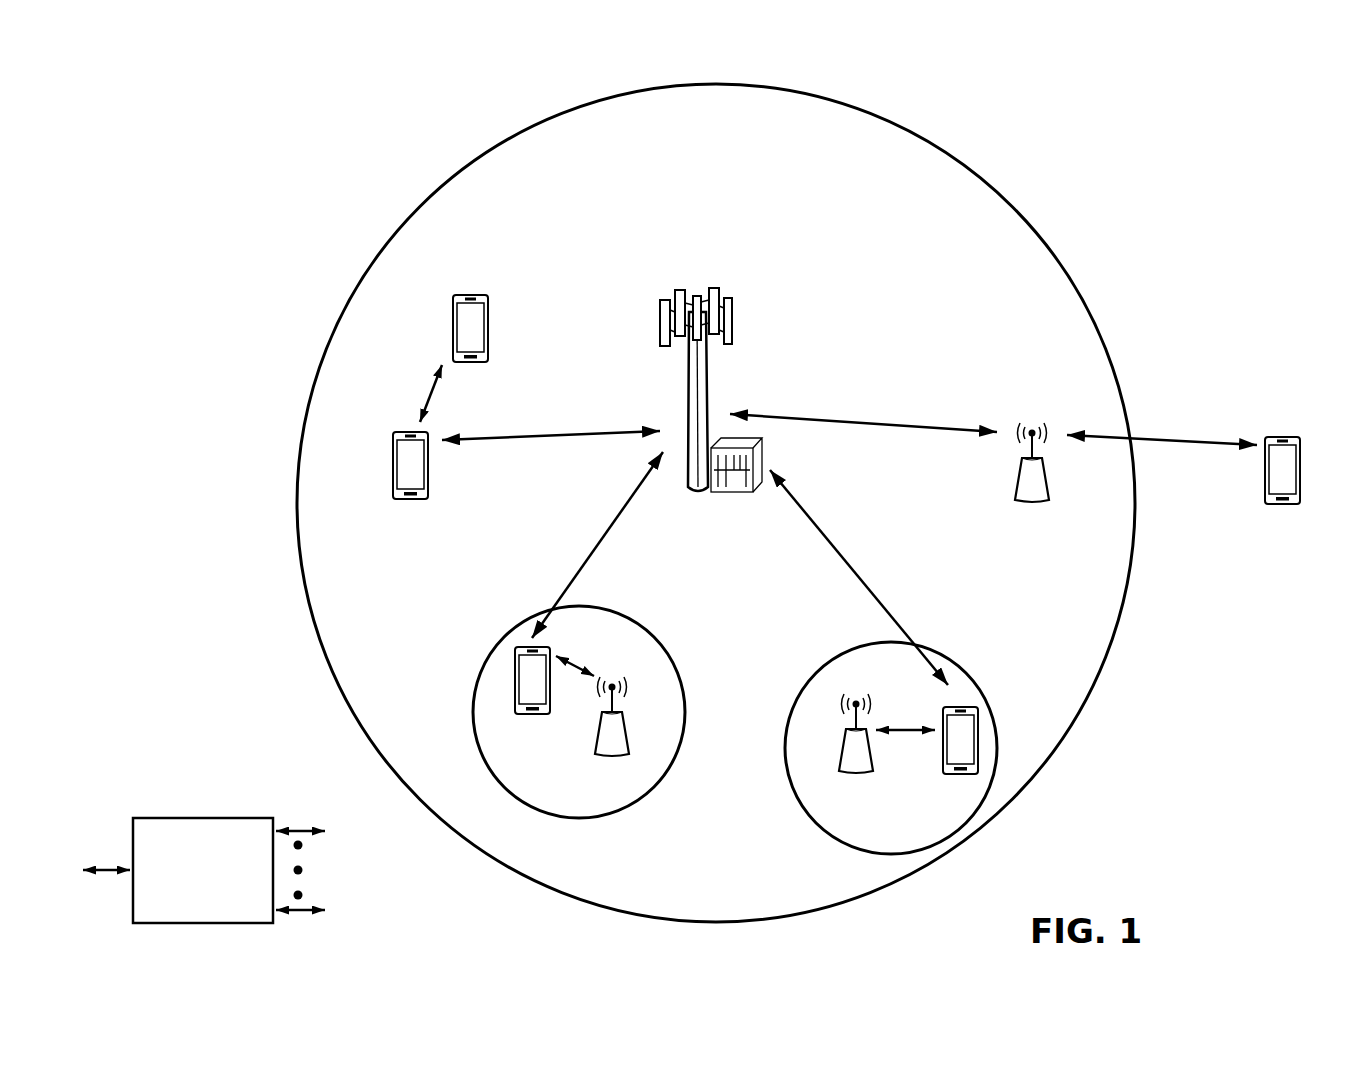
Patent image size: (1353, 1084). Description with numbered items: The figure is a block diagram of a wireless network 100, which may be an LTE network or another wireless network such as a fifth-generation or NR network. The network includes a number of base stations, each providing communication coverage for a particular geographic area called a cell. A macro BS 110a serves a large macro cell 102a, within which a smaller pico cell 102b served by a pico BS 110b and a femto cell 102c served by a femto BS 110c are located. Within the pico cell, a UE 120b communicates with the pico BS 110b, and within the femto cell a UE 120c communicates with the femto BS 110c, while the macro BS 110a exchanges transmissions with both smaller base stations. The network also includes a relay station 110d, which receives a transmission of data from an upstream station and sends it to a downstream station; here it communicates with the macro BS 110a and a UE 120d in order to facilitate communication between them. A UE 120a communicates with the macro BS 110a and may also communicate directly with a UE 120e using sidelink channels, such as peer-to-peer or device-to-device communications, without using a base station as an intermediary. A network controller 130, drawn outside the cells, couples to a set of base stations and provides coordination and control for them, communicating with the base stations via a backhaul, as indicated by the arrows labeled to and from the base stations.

The wireless network 100 is at (185, 78).
The macro cell 102a is at (994, 191).
The pico cell 102b is at (667, 654).
The femto cell 102c is at (832, 664).
The macro BS 110a is at (703, 282).
The pico BS 110b is at (632, 742).
The femto BS 110c is at (840, 760).
The relay station 110d is at (1034, 429).
The UE 120a is at (392, 466).
The UE 120b is at (522, 712).
The UE 120c is at (948, 773).
The UE 120d is at (1296, 437).
The UE 120e is at (452, 314).
The network controller 130 is at (202, 817).